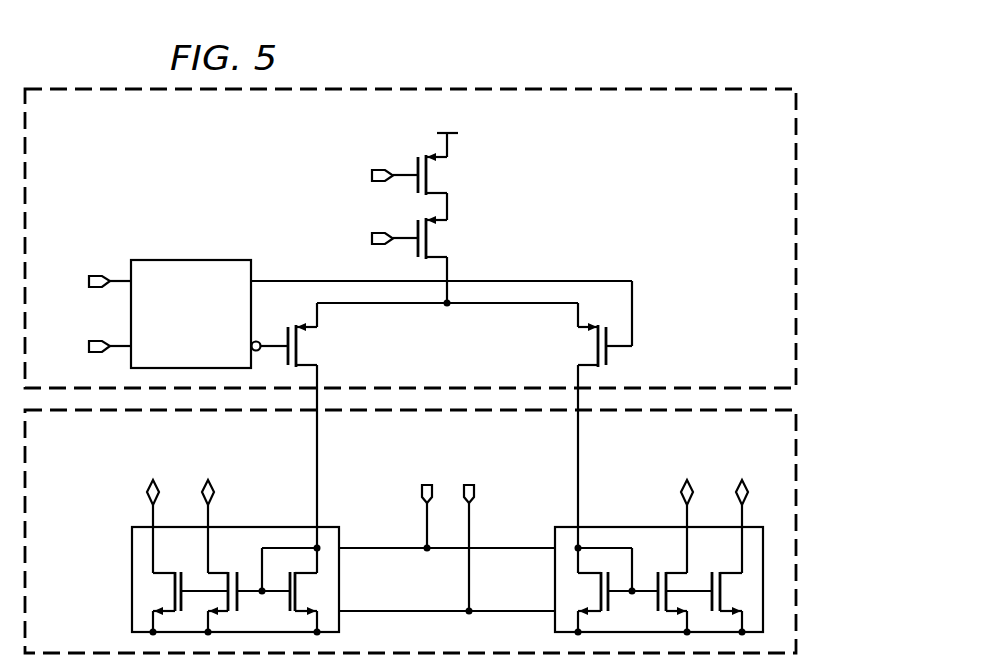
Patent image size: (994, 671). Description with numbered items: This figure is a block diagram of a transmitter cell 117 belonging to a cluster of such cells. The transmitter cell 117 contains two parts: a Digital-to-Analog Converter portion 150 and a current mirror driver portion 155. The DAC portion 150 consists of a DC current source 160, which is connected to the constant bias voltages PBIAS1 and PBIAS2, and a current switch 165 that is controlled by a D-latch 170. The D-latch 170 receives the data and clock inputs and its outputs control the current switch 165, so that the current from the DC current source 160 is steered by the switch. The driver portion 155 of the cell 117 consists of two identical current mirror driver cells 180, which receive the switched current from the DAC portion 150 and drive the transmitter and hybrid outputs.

The transmitter cell 117 is at (668, 62).
The DAC portion 150 is at (804, 199).
The current mirror driver portion 155 is at (804, 574).
The DC current source 160 is at (472, 205).
The current switch 165 is at (659, 328).
The D-latch 170 is at (190, 258).
The current mirror driver cell 180 is at (280, 520).